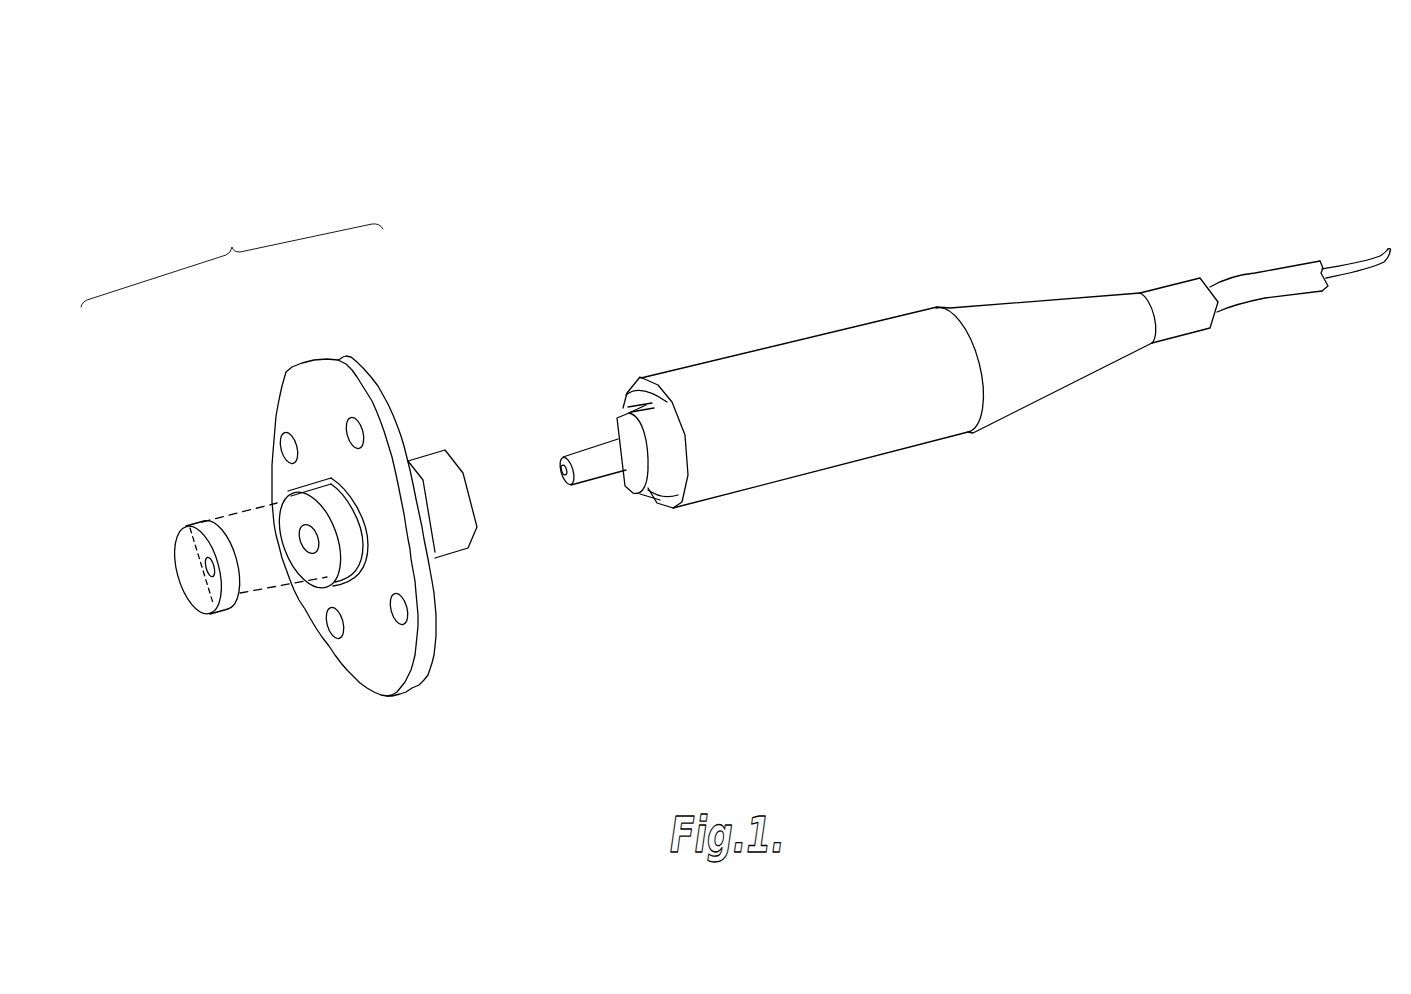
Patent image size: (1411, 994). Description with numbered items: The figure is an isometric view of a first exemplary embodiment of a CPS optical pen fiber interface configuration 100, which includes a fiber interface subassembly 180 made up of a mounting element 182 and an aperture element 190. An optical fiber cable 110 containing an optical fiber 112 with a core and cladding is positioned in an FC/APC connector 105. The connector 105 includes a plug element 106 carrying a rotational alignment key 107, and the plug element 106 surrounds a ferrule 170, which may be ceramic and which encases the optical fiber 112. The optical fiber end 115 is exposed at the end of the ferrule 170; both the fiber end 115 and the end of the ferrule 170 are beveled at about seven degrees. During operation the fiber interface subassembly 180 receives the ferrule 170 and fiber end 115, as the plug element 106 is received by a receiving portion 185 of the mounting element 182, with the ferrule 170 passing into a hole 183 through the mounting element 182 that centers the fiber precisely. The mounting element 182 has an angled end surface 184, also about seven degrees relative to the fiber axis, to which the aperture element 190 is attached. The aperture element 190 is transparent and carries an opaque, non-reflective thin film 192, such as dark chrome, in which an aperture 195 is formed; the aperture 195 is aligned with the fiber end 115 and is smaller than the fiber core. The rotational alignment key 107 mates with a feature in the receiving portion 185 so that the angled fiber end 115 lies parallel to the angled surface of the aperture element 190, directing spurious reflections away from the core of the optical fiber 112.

The CPS optical pen fiber interface configuration 100 is at (1231, 100).
The FC/APC connector 105 is at (744, 352).
The plug element 106 is at (665, 447).
The rotational alignment key 107 is at (641, 402).
The optical fiber cable 110 is at (1245, 272).
The optical fiber 112 is at (1352, 275).
The optical fiber end 115 is at (562, 480).
The ferrule 170 is at (588, 460).
The fiber interface subassembly 180 is at (231, 244).
The mounting element 182 is at (316, 358).
The hole 183 is at (309, 546).
The angled end surface 184 is at (300, 511).
The receiving portion 185 is at (458, 557).
The aperture element 190 is at (208, 612).
The opaque thin film 192 is at (252, 593).
The aperture 195 is at (220, 563).